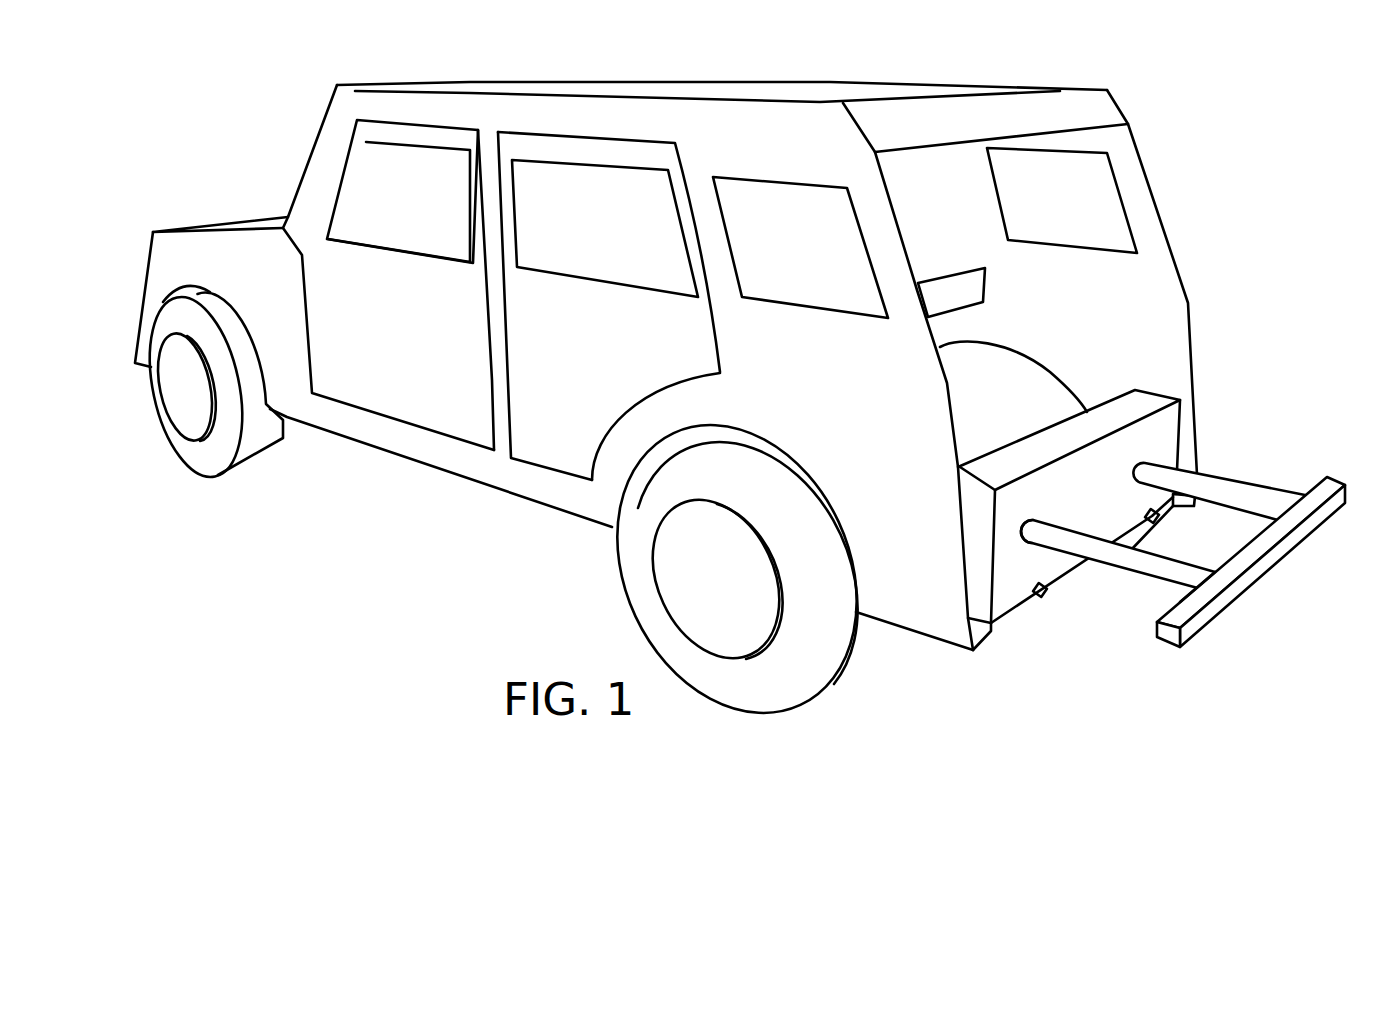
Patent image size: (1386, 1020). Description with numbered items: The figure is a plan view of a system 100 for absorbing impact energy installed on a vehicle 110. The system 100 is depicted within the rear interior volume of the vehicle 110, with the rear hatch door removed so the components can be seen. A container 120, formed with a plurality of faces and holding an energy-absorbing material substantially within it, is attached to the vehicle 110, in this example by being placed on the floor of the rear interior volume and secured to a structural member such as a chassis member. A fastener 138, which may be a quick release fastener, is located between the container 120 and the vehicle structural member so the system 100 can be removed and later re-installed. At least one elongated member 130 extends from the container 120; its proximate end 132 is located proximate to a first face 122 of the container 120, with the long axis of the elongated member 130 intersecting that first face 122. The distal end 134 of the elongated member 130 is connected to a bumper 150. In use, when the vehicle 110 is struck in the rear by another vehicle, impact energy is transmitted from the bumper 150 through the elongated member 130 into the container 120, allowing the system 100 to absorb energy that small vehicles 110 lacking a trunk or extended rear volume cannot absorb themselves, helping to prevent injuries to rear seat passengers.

The system for absorbing impact energy 100 is at (395, 576).
The vehicle 110 is at (397, 433).
The container 120 is at (1147, 402).
The first face 122 is at (1008, 592).
The elongated member 130 is at (1222, 488).
The proximate end 132 is at (1050, 538).
The distal end 134 is at (1190, 573).
The fastener 138 is at (1044, 595).
The bumper 150 is at (1273, 562).